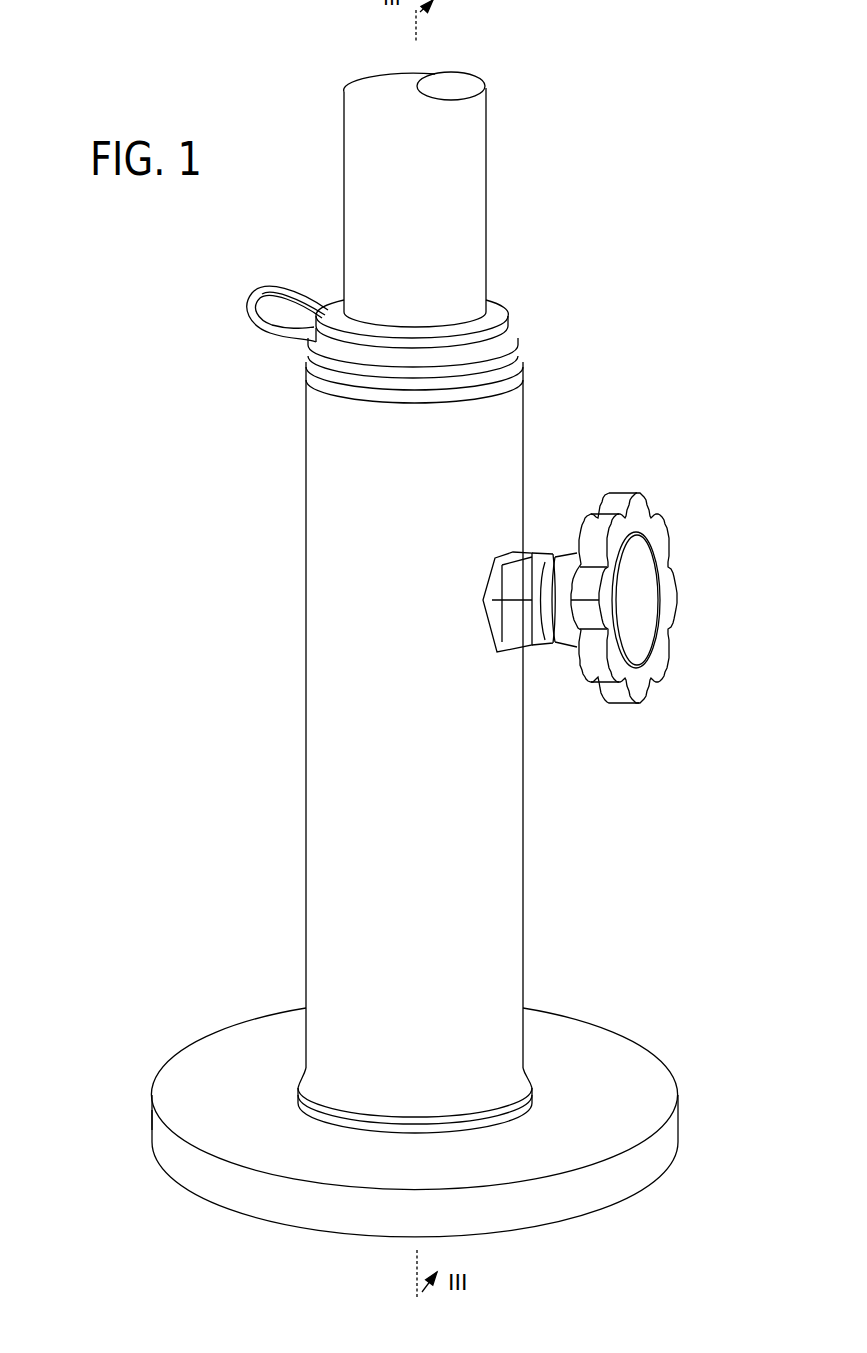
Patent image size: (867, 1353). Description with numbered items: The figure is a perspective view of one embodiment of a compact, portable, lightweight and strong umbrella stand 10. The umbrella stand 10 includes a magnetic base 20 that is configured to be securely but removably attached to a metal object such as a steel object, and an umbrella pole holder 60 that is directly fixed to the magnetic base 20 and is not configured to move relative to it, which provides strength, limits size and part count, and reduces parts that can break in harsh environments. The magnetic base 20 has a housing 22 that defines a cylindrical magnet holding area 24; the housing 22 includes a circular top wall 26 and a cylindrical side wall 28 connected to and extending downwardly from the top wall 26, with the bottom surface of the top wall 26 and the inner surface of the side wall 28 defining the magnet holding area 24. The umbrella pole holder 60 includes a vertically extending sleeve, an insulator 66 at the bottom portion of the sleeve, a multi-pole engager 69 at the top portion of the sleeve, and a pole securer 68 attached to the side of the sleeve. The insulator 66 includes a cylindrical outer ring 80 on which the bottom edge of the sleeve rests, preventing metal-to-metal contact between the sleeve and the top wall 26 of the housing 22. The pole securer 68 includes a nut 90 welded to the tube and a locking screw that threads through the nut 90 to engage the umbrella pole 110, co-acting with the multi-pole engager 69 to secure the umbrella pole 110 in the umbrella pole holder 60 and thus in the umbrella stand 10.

The umbrella stand 10 is at (158, 478).
The magnetic base 20 is at (147, 1048).
The housing 22 is at (677, 1078).
The magnet holding area 24 is at (275, 1200).
The top wall 26 is at (222, 1122).
The side wall 28 is at (202, 1177).
The umbrella pole holder 60 is at (282, 810).
The insulator 66 is at (530, 1087).
The pole securer 68 is at (677, 598).
The multi-pole engager 69 is at (518, 346).
The outer ring 80 is at (505, 1115).
The nut 90 is at (533, 552).
The umbrella pole 110 is at (458, 197).